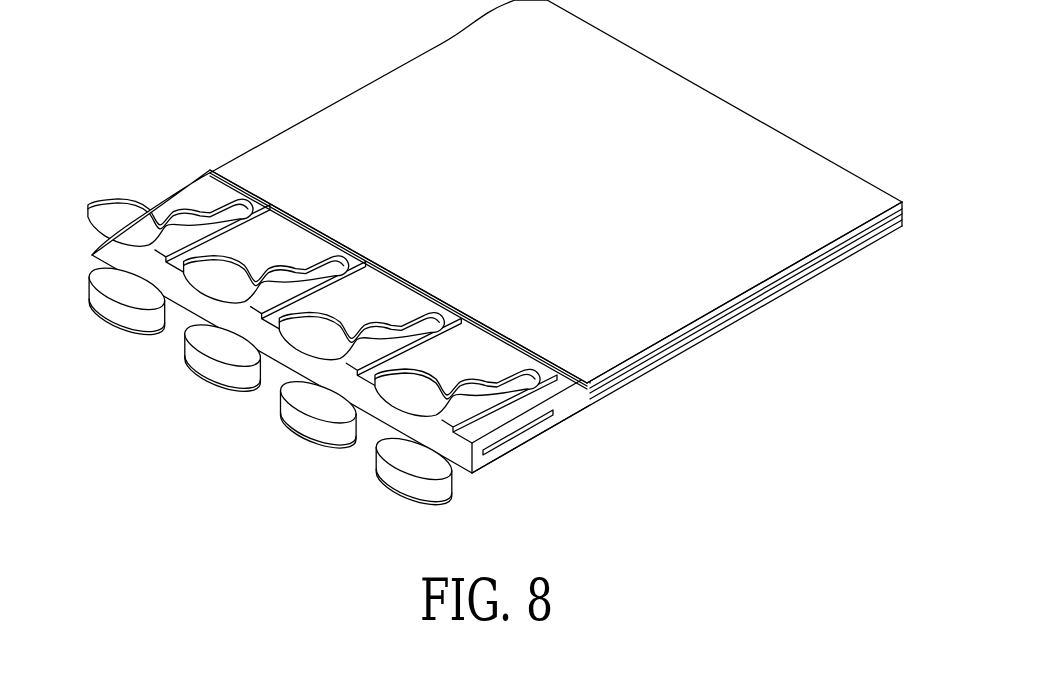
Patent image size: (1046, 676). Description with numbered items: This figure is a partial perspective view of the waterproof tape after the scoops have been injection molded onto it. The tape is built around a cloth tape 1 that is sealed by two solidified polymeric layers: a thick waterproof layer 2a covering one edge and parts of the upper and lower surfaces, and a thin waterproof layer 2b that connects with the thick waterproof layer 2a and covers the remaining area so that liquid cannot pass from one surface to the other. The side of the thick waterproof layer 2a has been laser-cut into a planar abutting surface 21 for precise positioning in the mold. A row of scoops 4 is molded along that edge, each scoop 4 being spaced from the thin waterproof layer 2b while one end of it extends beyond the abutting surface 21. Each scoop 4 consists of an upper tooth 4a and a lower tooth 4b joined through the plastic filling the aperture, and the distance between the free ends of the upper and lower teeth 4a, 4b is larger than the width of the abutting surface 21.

The cloth tape 1 is at (620, 377).
The thick waterproof layer 2a is at (527, 407).
The thin waterproof layer 2b is at (683, 310).
The abutting surface 21 is at (461, 455).
The scoop 4 is at (263, 482).
The upper tooth 4a is at (390, 413).
The lower tooth 4b is at (397, 481).